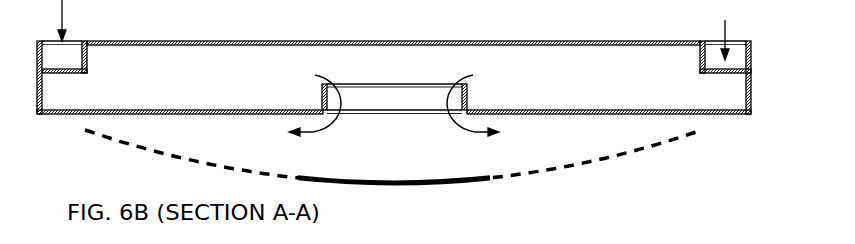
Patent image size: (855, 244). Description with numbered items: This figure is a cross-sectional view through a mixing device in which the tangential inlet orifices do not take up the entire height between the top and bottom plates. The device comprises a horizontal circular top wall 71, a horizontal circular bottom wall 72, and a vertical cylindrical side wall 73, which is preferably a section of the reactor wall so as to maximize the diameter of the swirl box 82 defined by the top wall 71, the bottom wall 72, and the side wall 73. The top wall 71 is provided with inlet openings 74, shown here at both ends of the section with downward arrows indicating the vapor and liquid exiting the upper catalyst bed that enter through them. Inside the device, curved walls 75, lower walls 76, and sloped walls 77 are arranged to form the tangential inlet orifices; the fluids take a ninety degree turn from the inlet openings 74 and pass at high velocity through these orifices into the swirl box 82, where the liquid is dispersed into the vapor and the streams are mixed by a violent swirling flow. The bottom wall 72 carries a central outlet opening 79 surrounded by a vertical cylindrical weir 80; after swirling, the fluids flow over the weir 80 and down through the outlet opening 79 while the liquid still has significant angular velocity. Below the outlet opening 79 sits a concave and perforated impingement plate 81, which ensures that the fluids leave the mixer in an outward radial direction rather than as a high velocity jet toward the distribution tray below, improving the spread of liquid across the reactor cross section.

The top wall 71 is at (581, 41).
The bottom wall 72 is at (511, 115).
The side wall 73 is at (752, 90).
The inlet openings 74 is at (68, 41).
The curved walls 75 is at (88, 60).
The lower walls 76 is at (65, 74).
The sloped walls 77 is at (73, 65).
The outlet opening 79 is at (398, 100).
The weir 80 is at (468, 95).
The impingement plate 81 is at (345, 180).
The swirl box 82 is at (203, 72).